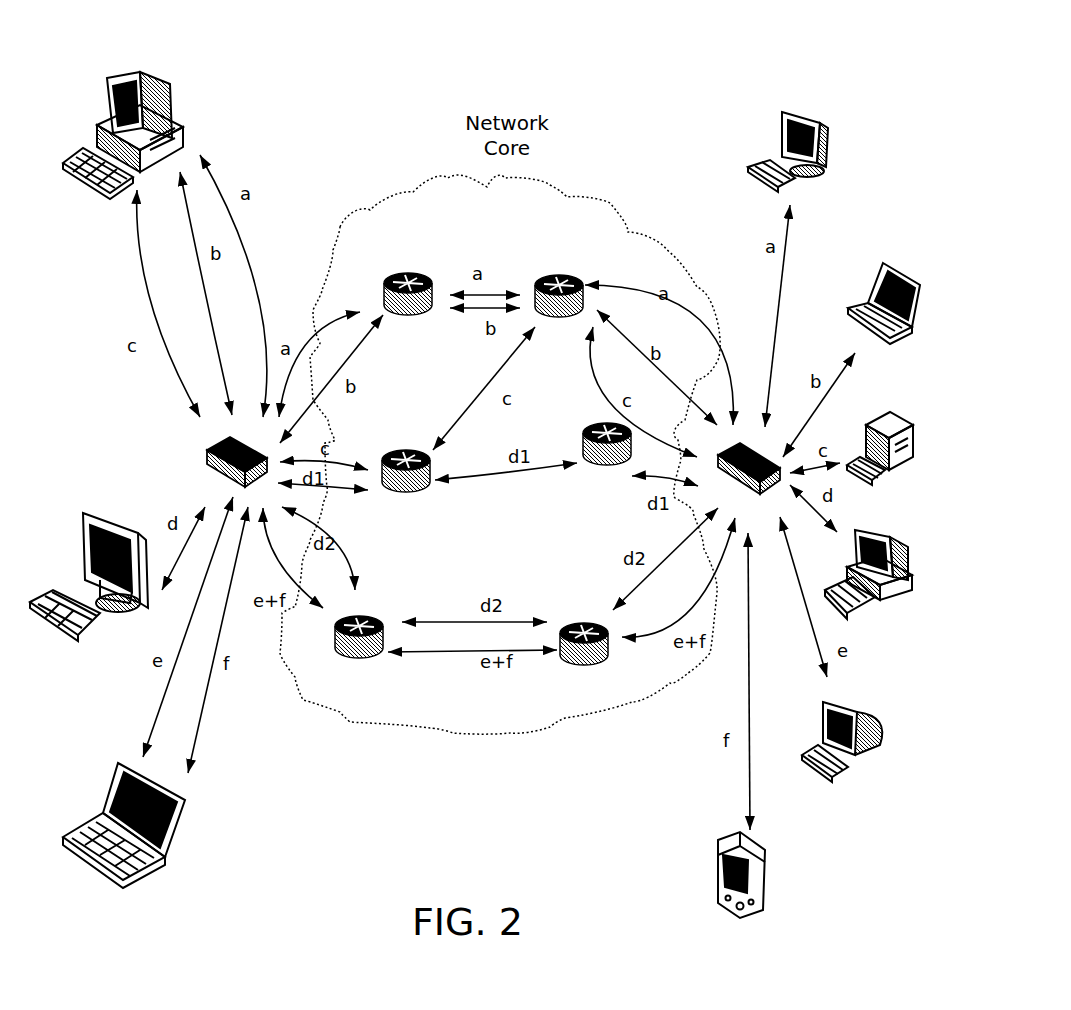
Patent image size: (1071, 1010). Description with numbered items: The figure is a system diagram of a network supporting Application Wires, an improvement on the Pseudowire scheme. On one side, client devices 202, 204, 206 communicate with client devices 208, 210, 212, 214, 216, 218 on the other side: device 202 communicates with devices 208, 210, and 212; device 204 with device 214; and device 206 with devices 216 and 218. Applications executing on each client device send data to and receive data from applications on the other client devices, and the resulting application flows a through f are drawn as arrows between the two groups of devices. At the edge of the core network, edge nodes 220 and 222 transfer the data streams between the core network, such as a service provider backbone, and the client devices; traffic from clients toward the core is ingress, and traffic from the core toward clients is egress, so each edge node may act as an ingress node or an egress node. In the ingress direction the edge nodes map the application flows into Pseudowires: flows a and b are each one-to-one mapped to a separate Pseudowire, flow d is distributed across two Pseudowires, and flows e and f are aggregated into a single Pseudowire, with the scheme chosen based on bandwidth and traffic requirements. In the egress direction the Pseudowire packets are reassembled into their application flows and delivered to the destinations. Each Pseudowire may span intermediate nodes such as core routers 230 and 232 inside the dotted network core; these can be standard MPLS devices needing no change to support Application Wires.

The client device 202 is at (188, 120).
The client device 204 is at (95, 517).
The client device 206 is at (188, 820).
The client device 208 is at (780, 95).
The client device 210 is at (883, 263).
The client device 212 is at (870, 427).
The client device 214 is at (892, 537).
The client device 216 is at (838, 698).
The client device 218 is at (768, 903).
The edge node 220 is at (203, 452).
The edge node 222 is at (742, 438).
The core router 230 is at (402, 270).
The core router 232 is at (558, 275).